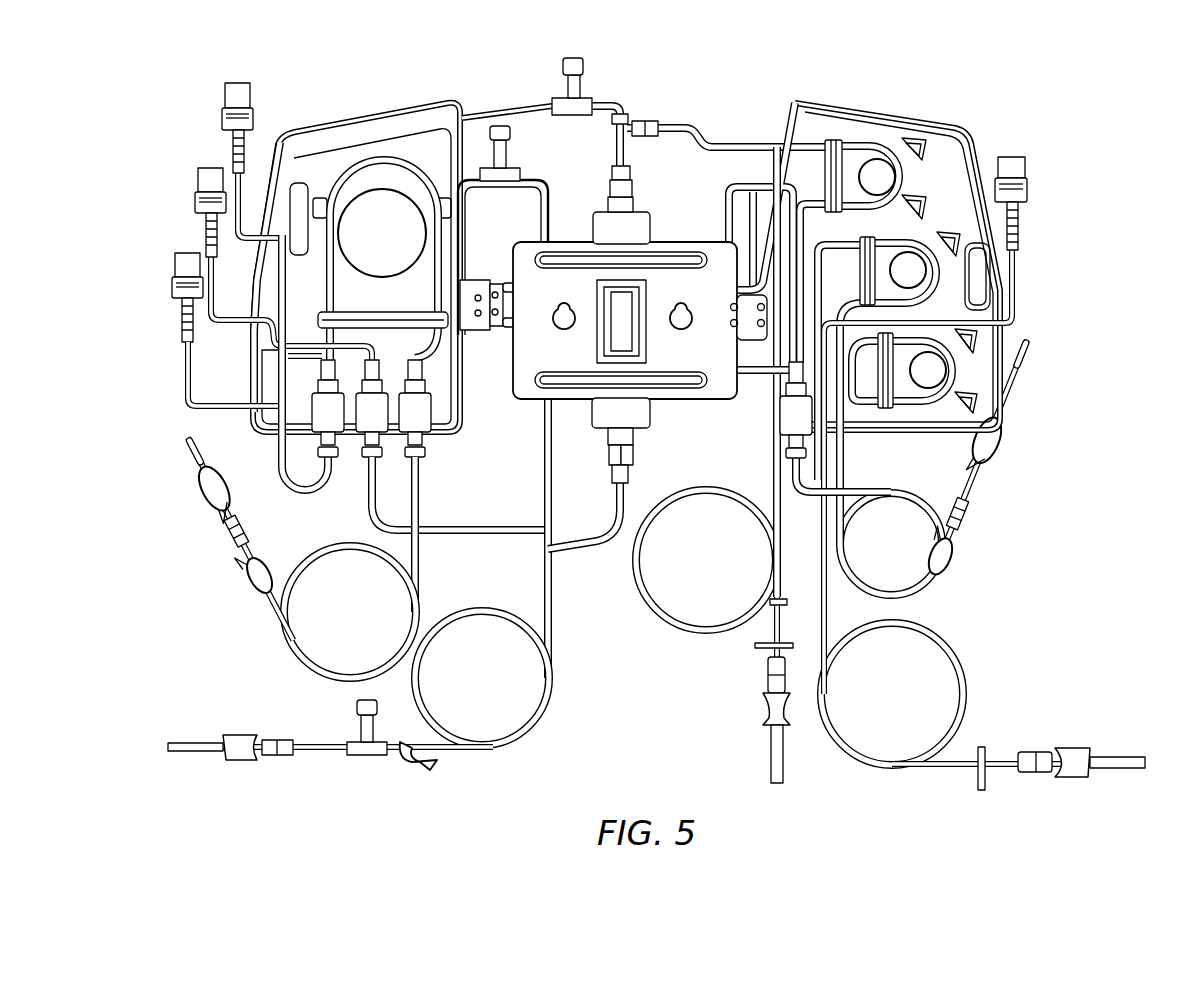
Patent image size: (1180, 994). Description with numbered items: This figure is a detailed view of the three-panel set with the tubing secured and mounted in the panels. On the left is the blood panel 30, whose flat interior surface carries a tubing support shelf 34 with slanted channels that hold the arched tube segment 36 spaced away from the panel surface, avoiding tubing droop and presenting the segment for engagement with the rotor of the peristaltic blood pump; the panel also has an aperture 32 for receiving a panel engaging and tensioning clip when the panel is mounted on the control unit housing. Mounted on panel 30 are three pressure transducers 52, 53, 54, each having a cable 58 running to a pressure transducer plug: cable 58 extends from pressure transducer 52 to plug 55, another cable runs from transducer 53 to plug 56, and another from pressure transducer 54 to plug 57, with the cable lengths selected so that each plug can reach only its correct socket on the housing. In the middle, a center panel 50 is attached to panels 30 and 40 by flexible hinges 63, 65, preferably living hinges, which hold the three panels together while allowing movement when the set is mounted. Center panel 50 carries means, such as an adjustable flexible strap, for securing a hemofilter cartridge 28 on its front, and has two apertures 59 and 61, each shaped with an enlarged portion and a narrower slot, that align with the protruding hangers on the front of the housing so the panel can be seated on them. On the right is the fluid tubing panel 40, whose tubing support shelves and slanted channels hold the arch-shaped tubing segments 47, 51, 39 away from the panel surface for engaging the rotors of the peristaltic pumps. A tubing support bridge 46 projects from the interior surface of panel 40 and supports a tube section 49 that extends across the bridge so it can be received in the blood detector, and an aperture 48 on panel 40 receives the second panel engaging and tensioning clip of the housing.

The hemofilter cartridge 28 is at (640, 220).
The panel 30 is at (322, 134).
The aperture 32 is at (278, 162).
The tubing support shelf 34 is at (362, 314).
The arched tube segment 36 is at (380, 163).
The arch-shaped tubing segment 39 is at (878, 147).
The fluid tubing panel 40 is at (830, 122).
The tubing support bridge 46 is at (790, 230).
The arch-shaped tubing segment 47 is at (932, 398).
The aperture 48 is at (993, 292).
The tube section 49 is at (792, 105).
The center panel 50 is at (720, 270).
The arch-shaped tubing segment 51 is at (920, 247).
The pressure transducer 52 is at (337, 425).
The pressure transducer 53 is at (382, 422).
The pressure transducer 54 is at (437, 428).
The plug 55 is at (182, 263).
The plug 56 is at (208, 178).
The plug 57 is at (232, 92).
The cable 58 is at (185, 385).
The aperture 59 is at (556, 322).
The aperture 61 is at (686, 322).
The flexible hinge 63 is at (488, 280).
The flexible hinge 65 is at (748, 278).